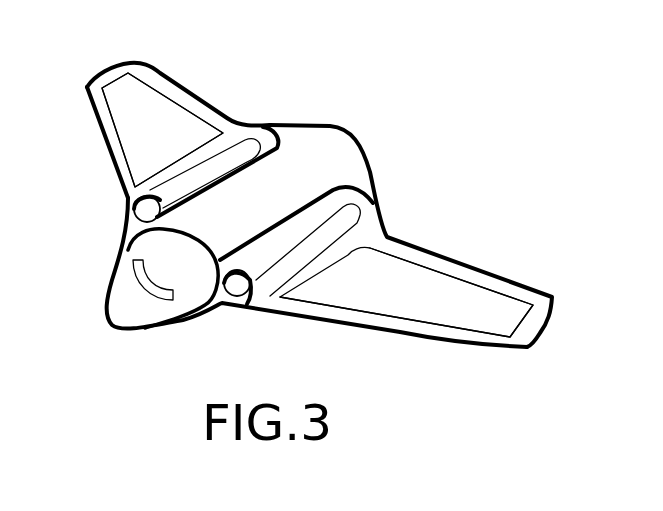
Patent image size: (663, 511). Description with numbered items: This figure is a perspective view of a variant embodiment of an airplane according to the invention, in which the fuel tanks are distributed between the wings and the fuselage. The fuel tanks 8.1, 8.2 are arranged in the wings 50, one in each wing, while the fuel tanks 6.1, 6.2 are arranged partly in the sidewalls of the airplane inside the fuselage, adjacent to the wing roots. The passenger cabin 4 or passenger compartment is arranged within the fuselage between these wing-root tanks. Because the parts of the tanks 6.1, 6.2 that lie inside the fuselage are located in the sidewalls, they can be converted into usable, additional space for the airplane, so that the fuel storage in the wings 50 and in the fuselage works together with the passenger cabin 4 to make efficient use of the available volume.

The passenger cabin 4 is at (247, 220).
The fuel tank 6.1 is at (343, 210).
The fuel tank 6.2 is at (248, 147).
The fuel tank 8.1 is at (417, 287).
The fuel tank 8.2 is at (172, 117).
The wing 50 is at (158, 85).